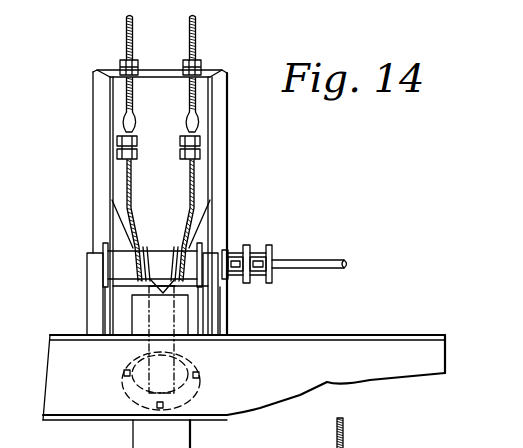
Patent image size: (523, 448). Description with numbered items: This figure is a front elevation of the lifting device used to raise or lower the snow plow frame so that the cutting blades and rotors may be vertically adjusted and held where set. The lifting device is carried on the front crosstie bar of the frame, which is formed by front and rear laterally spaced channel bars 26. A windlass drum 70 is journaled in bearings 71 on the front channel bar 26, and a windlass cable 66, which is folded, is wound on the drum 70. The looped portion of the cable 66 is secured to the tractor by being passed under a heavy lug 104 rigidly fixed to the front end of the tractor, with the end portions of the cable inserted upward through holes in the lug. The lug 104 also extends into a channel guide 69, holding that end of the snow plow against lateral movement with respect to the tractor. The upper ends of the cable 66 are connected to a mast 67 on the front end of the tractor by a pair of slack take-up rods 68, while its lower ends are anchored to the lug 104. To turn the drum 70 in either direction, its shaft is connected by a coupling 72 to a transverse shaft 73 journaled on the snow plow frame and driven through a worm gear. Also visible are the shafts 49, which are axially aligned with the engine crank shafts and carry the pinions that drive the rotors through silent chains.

The channel bars 26 is at (62, 371).
The shafts 49 is at (380, 444).
The windlass cable 66 is at (190, 191).
The mast 67 is at (97, 172).
The slack take-up rods 68 is at (125, 38).
The channel guide 69 is at (140, 433).
The windlass drum 70 is at (150, 258).
The bearings 71 is at (97, 312).
The coupling 72 is at (277, 250).
The transverse shaft 73 is at (318, 262).
The lug 104 is at (200, 376).